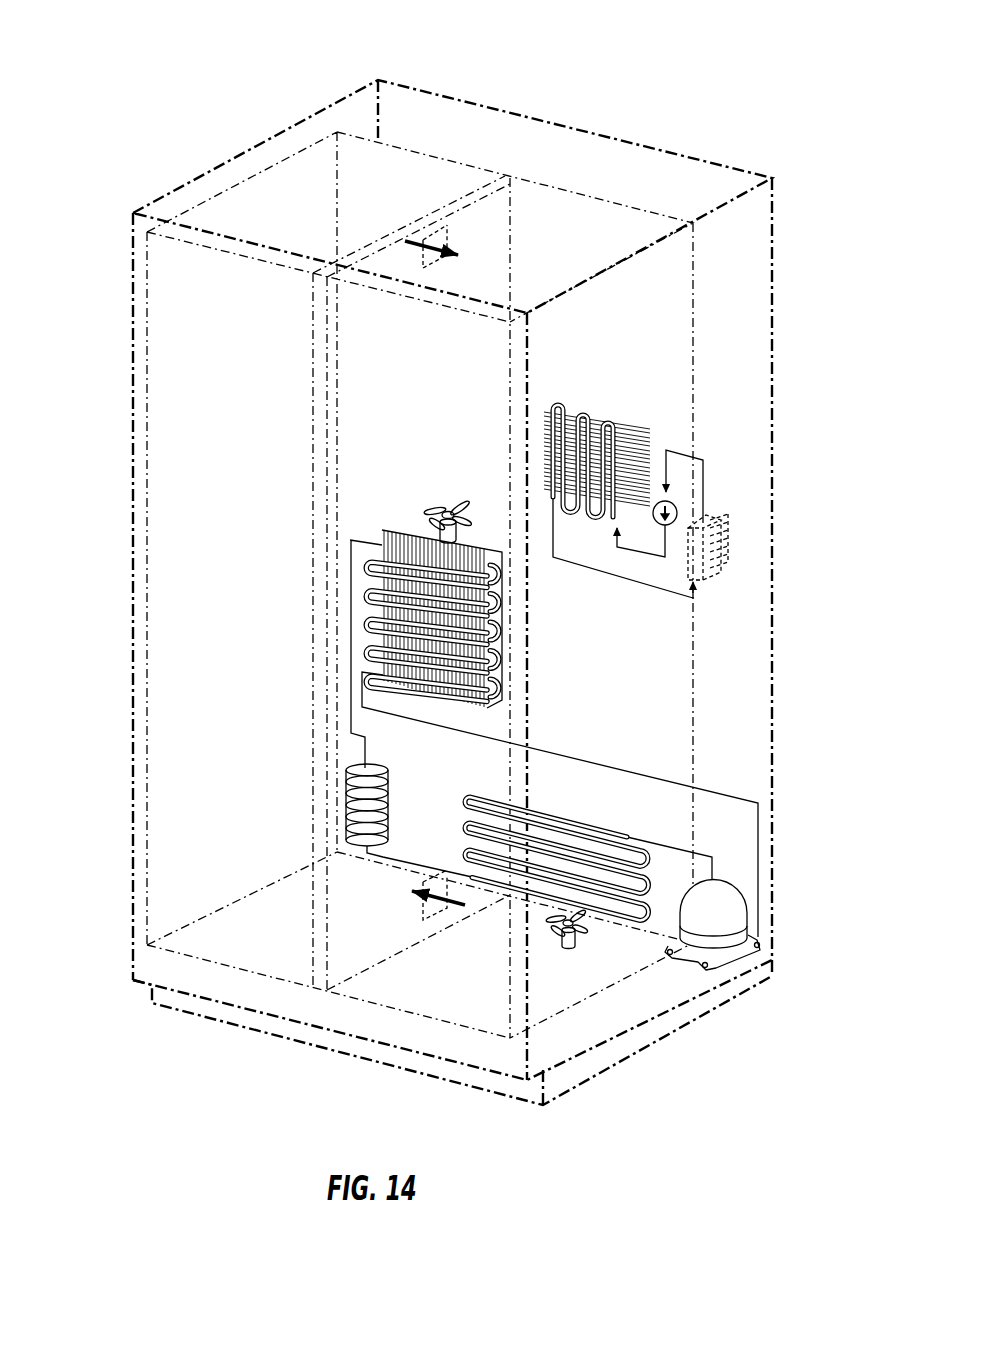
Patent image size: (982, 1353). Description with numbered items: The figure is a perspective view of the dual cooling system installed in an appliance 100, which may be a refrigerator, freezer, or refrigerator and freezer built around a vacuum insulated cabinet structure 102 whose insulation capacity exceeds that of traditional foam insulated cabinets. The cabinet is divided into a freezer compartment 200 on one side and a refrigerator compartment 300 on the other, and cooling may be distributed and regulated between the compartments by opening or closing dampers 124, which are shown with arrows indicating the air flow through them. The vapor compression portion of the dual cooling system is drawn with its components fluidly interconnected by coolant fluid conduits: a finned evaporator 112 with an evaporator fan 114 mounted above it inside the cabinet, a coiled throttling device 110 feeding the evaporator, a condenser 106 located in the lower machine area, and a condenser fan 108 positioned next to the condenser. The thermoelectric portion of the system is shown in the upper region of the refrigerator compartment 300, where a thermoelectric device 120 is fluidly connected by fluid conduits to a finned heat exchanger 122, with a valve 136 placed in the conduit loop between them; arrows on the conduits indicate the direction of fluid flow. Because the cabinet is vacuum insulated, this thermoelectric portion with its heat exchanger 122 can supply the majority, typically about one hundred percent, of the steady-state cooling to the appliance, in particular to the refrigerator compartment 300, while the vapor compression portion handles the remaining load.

The appliance 100 is at (417, 564).
The vacuum insulated cabinet structure 102 is at (423, 592).
The freezer compartment 200 is at (286, 585).
The refrigerator compartment 300 is at (515, 554).
The dampers 124 is at (424, 573).
The evaporator 112 is at (375, 619).
The evaporator fan 114 is at (427, 485).
The throttling device 110 is at (324, 781).
The heat exchanger 122 is at (687, 417).
The valve 136 is at (710, 485).
The thermoelectric device 120 is at (759, 521).
The condenser 106 is at (726, 972).
The condenser fan 108 is at (607, 1017).